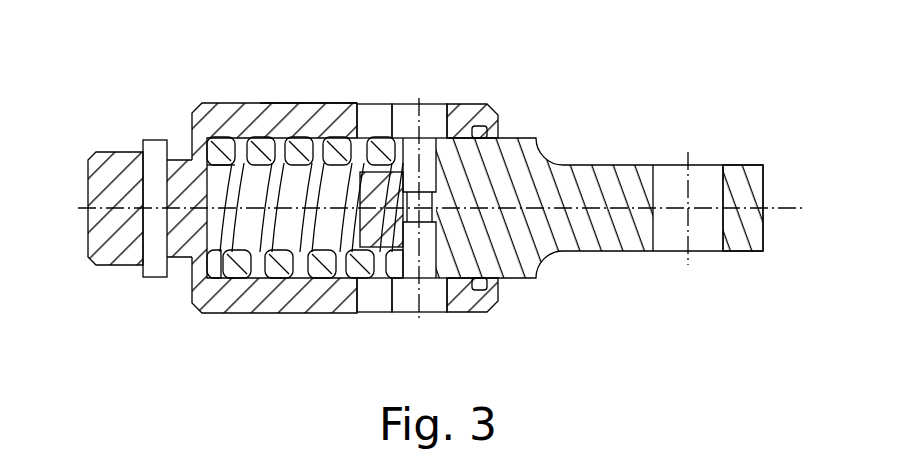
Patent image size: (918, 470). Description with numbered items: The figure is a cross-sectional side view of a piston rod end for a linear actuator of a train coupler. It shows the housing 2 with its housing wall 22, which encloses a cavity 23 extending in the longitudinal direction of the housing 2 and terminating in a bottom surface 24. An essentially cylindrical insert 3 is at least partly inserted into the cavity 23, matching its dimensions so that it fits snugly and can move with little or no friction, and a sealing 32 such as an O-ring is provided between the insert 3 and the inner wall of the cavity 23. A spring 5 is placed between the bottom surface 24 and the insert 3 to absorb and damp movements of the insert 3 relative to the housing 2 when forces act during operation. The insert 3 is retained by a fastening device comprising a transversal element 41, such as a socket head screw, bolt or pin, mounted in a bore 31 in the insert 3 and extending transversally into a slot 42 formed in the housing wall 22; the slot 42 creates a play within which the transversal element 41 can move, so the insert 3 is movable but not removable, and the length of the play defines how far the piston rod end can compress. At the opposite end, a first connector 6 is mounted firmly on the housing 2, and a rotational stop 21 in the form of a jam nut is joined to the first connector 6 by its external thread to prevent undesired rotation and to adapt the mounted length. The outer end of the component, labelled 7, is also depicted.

The housing 2 is at (262, 313).
The insert 3 is at (571, 257).
The spring 5 is at (345, 243).
The first connector 6 is at (112, 257).
The shaft end 7 is at (748, 180).
The rotational stop 21 is at (150, 138).
The housing wall 22 is at (317, 102).
The cavity 23 is at (240, 140).
The bottom surface 24 is at (187, 258).
The bore 31 is at (463, 267).
The sealing 32 is at (482, 127).
The transversal element 41 is at (433, 113).
The slot 42 is at (378, 115).